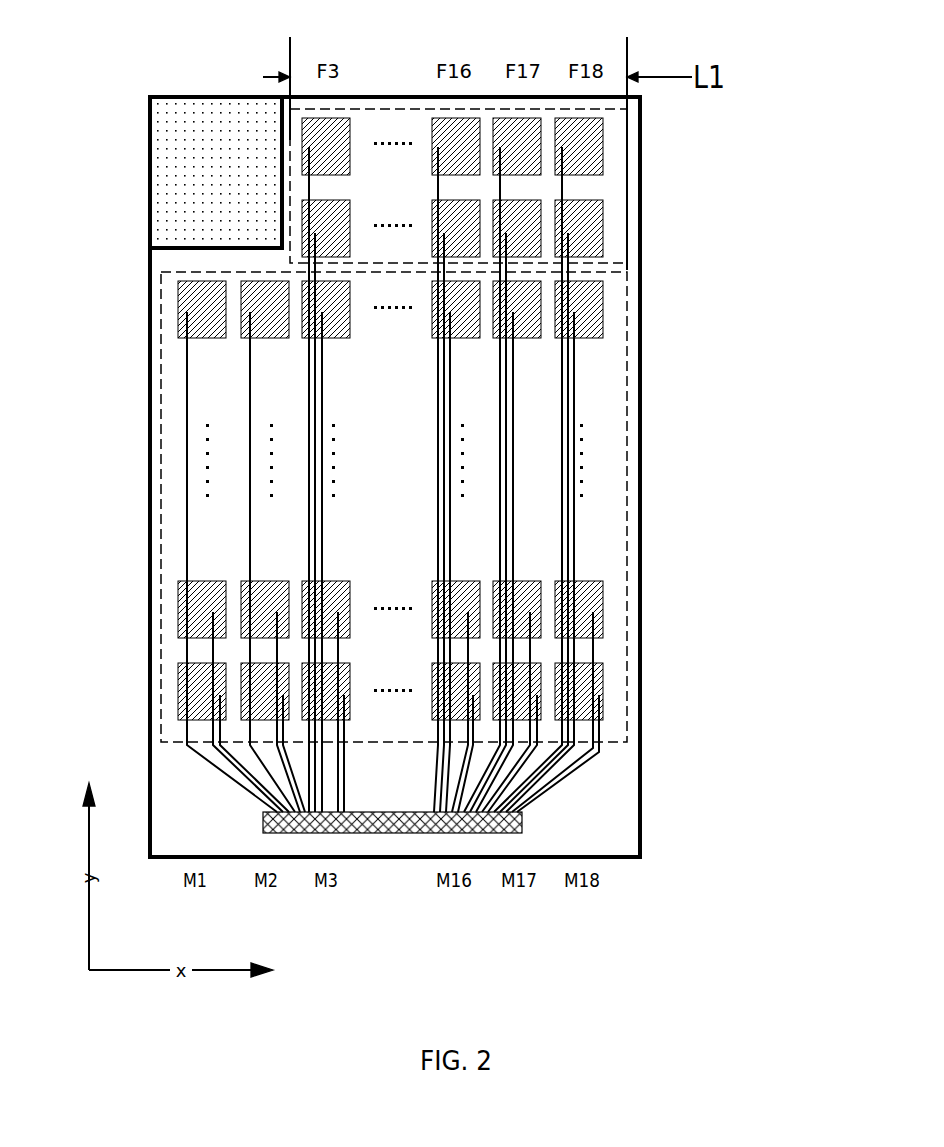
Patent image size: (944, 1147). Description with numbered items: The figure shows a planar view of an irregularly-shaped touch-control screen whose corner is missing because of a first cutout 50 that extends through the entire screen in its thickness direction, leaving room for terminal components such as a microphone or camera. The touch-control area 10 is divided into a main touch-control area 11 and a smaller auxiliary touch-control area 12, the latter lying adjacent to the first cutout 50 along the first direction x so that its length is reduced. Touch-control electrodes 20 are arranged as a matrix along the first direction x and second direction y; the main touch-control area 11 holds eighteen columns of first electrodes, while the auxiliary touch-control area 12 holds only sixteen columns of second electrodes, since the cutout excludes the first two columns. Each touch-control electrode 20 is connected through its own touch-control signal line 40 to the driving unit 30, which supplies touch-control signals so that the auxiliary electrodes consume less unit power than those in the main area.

The touch-control area 10 is at (718, 198).
The main touch-control area 11 is at (444, 507).
The auxiliary touch-control area 12 is at (509, 186).
The touch-control electrode 20 is at (631, 599).
The driving unit 30 is at (485, 810).
The touch-control signal line 40 is at (601, 479).
The first cutout 50 is at (216, 131).